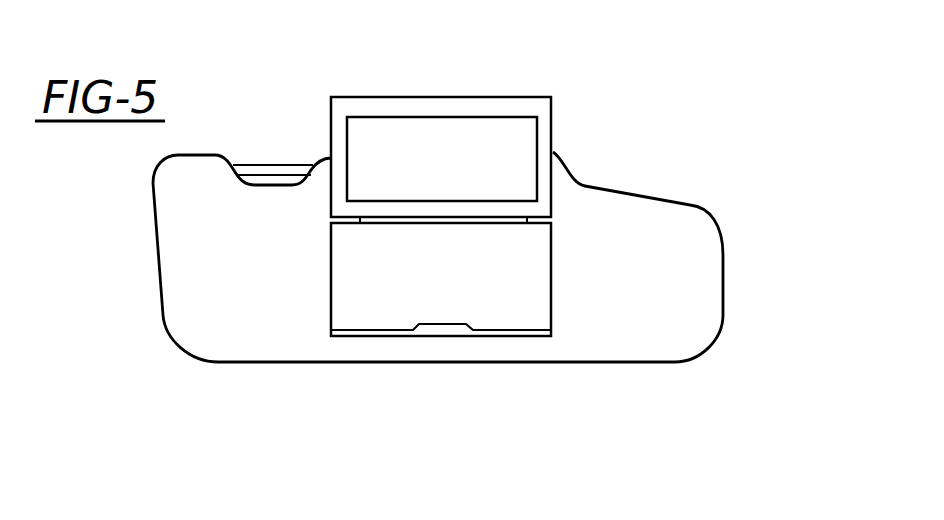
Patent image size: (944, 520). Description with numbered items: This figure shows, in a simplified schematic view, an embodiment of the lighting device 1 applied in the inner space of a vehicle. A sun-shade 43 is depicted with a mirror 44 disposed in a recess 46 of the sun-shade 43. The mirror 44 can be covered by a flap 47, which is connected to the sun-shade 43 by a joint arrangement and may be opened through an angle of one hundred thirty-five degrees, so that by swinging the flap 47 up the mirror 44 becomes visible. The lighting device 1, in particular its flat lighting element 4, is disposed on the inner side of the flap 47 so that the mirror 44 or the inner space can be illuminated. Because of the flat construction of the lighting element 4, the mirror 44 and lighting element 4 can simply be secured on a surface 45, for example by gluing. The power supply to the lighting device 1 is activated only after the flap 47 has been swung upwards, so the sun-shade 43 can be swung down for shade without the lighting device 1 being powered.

The lighting device 1 is at (420, 213).
The lighting element 4 is at (525, 142).
The sun-shade 43 is at (631, 200).
The mirror 44 is at (450, 315).
The surface 45 is at (692, 220).
The recess 46 is at (322, 265).
The flap 47 is at (500, 97).